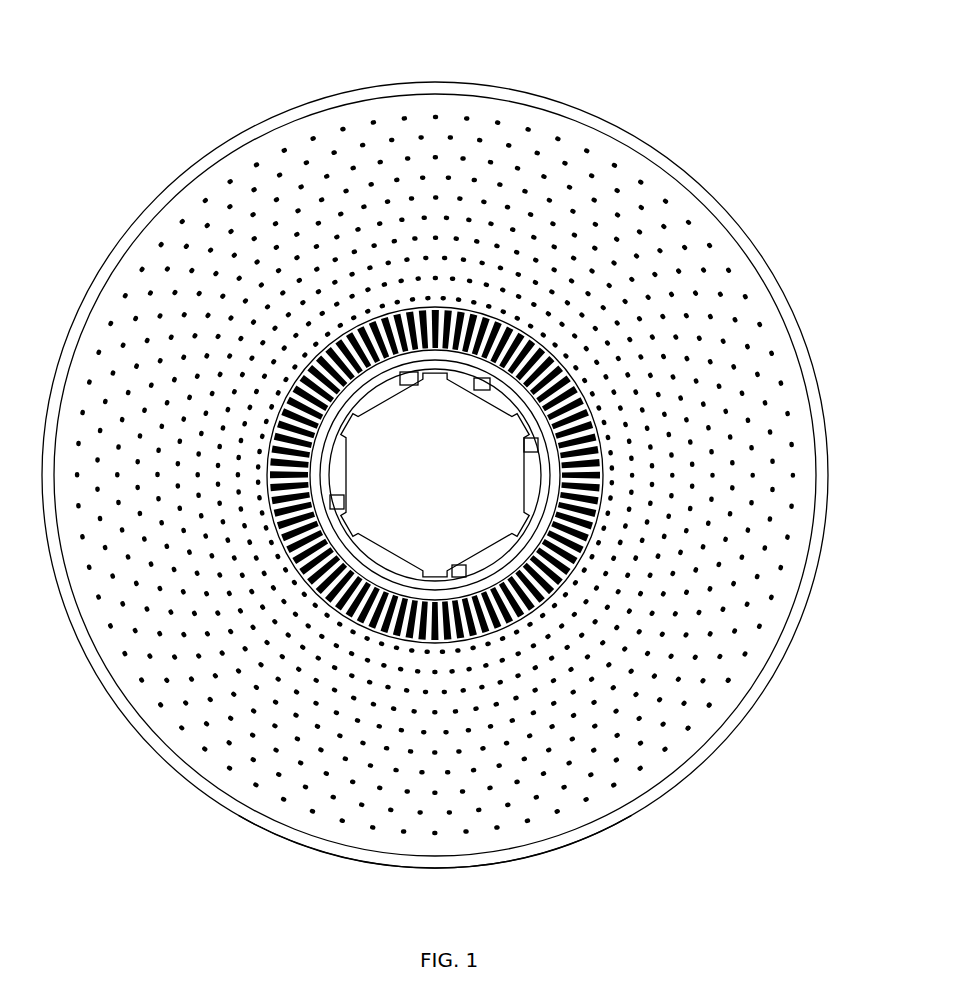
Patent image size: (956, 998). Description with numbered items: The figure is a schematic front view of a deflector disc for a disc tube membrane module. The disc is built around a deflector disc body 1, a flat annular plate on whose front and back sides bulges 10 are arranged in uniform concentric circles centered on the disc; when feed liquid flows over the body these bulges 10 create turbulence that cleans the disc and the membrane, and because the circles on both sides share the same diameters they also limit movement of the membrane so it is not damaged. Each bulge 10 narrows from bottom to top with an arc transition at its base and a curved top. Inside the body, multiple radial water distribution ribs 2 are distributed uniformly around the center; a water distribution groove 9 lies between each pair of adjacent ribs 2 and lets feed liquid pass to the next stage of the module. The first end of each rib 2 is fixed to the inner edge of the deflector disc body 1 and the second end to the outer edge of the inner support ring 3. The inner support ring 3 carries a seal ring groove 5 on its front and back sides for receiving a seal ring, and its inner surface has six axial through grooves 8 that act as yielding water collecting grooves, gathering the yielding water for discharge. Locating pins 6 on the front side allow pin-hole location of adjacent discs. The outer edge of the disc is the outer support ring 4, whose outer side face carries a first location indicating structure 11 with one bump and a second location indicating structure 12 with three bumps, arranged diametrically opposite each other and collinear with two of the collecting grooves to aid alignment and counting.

The deflector disc body 1 is at (648, 178).
The radial water distribution rib 2 is at (470, 312).
The inner support ring 3 is at (508, 393).
The outer support ring 4 is at (768, 277).
The seal ring groove 5 is at (542, 425).
The locating pin 6 is at (460, 572).
The axial through groove 8 is at (518, 523).
The water distribution groove 9 is at (557, 387).
The bulge 10 is at (707, 702).
The first location indicating structure 11 is at (436, 868).
The second location indicating structure 12 is at (433, 82).